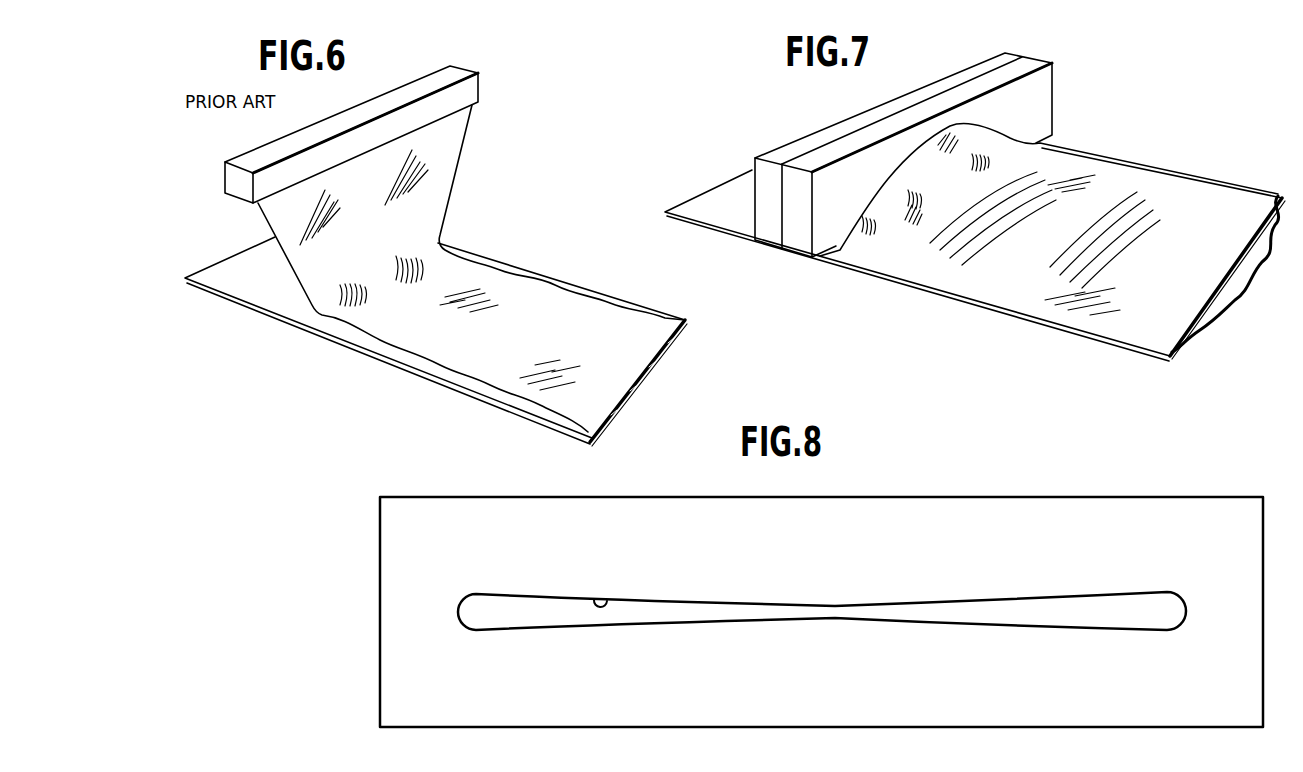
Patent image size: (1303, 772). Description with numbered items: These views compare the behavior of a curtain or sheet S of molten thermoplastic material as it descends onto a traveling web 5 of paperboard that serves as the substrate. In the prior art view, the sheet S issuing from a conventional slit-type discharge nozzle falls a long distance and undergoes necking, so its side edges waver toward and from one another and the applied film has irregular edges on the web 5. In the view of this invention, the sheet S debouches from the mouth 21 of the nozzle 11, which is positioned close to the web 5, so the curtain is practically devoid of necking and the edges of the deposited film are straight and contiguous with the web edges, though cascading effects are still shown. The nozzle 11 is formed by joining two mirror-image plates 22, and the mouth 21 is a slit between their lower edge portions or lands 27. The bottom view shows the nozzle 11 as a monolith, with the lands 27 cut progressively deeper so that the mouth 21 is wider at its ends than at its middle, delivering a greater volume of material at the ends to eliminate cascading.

In FIG. 6, the web 5 is at (550, 282).
In FIG. 7, the web 5 is at (1137, 166).
In FIG. 7, the nozzle 11 is at (1037, 88).
In FIG. 8, the nozzle 11 is at (418, 537).
In FIG. 8, the nozzle mouth 21 is at (870, 609).
In FIG. 7, the plates 22 is at (793, 242).
In FIG. 8, the lands 27 is at (606, 601).
In FIG. 6, the curtain or sheet S is at (430, 200).
In FIG. 7, the curtain or sheet S is at (868, 210).